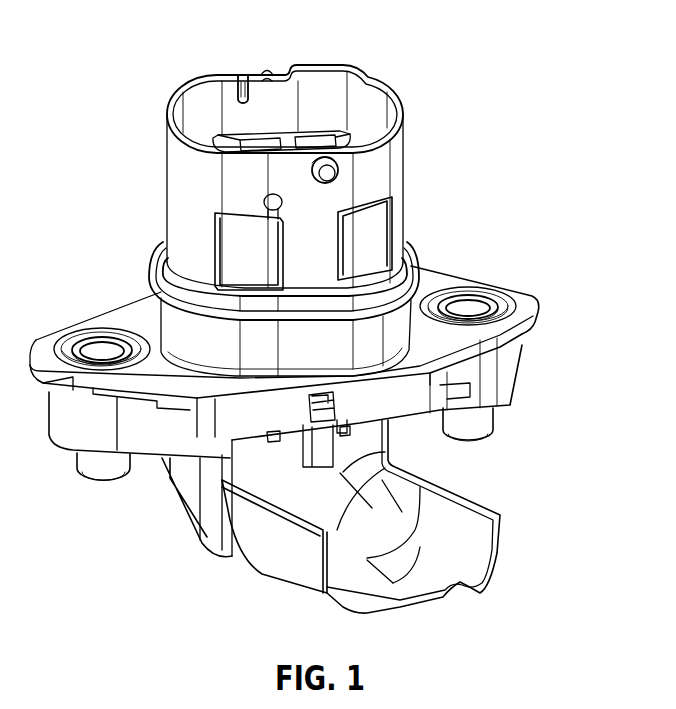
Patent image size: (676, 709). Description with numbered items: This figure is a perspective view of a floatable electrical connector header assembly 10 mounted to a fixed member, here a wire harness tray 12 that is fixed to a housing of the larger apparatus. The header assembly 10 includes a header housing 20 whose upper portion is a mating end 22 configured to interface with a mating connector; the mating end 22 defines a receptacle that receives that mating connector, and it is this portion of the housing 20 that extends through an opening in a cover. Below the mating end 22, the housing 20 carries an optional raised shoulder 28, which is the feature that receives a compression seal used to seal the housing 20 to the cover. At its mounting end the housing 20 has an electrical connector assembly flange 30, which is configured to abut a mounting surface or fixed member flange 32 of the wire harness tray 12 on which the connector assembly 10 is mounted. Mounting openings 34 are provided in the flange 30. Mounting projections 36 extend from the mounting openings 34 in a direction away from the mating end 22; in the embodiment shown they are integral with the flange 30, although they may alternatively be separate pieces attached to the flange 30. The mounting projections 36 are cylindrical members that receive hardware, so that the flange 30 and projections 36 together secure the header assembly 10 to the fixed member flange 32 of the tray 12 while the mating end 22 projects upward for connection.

The floatable electrical connector header assembly 10 is at (452, 115).
The wire harness tray 12 is at (515, 490).
The header housing 20 is at (167, 193).
The mating end 22 is at (232, 72).
The raised shoulder 28 is at (415, 252).
The electrical connector assembly flange 30 is at (466, 340).
The fixed member flange 32 is at (512, 372).
The mounting openings 34 is at (502, 280).
The mounting projections 36 is at (87, 463).